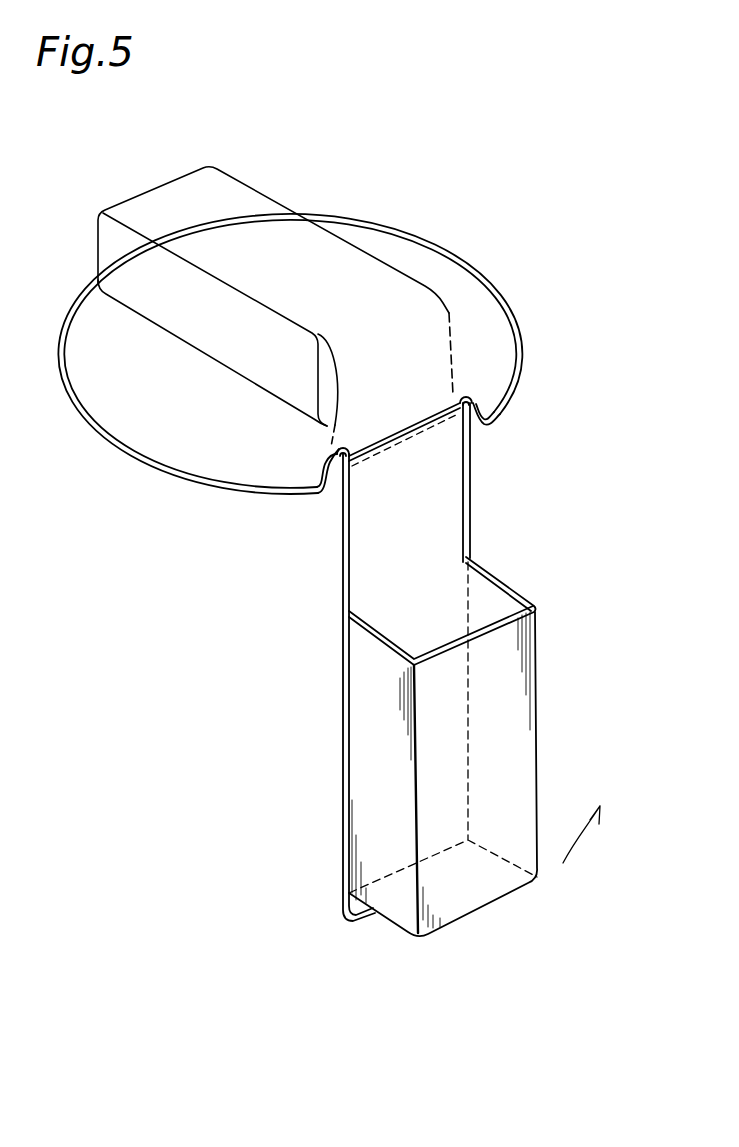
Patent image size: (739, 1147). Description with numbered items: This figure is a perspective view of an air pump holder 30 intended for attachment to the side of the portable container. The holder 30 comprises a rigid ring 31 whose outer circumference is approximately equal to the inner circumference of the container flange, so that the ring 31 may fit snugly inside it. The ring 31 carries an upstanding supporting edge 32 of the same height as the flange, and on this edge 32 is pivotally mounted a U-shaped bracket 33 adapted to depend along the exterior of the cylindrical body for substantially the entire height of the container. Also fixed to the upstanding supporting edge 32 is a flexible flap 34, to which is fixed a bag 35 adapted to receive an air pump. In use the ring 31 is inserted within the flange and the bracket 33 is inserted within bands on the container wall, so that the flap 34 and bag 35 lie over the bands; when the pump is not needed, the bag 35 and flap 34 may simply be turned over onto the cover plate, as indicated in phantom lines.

The air pump holder 30 is at (358, 169).
The rigid ring 31 is at (428, 243).
The upstanding supporting edge 32 is at (475, 403).
The U-shaped bracket 33 is at (343, 752).
The flexible flap 34 is at (443, 498).
The bag 35 is at (535, 667).